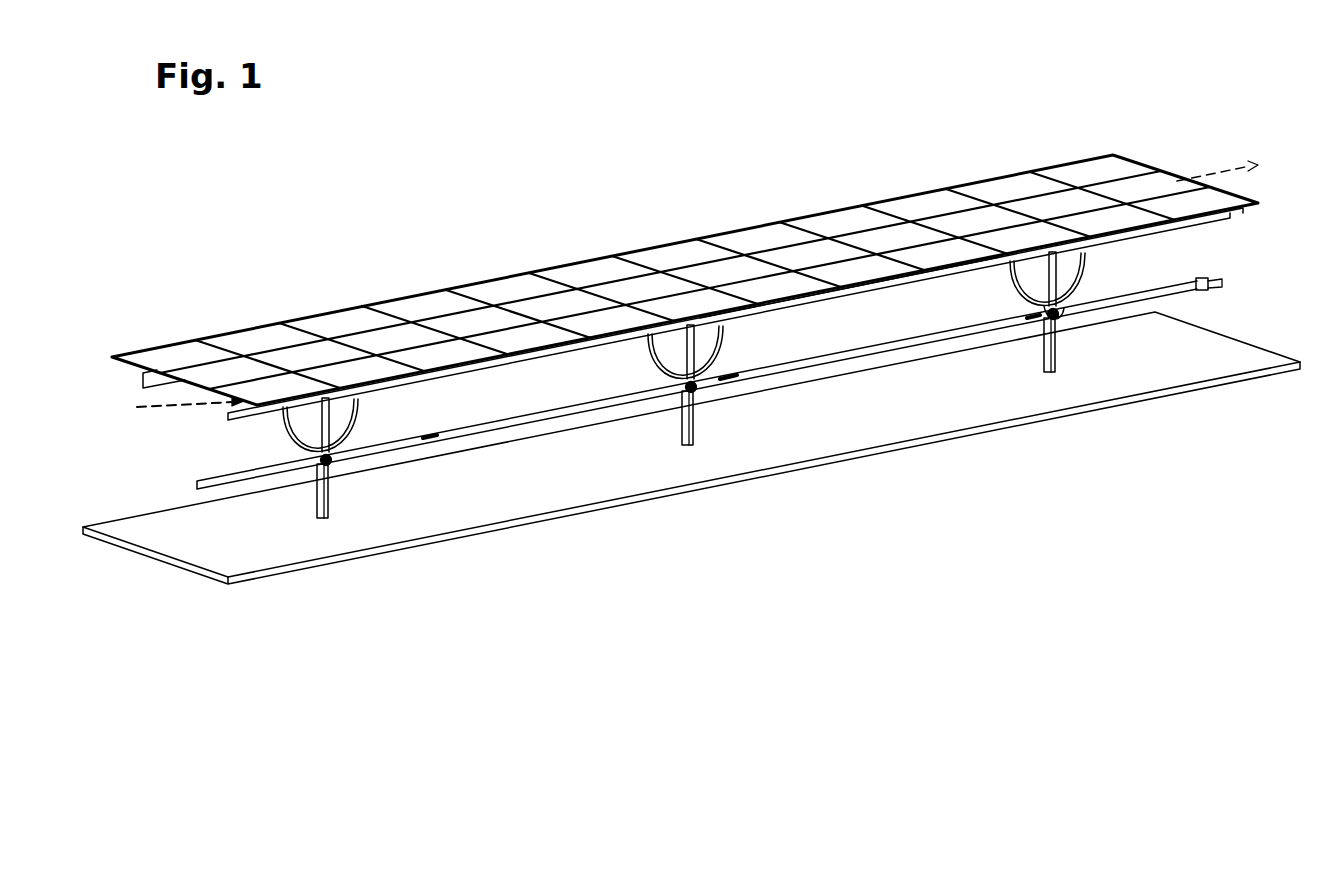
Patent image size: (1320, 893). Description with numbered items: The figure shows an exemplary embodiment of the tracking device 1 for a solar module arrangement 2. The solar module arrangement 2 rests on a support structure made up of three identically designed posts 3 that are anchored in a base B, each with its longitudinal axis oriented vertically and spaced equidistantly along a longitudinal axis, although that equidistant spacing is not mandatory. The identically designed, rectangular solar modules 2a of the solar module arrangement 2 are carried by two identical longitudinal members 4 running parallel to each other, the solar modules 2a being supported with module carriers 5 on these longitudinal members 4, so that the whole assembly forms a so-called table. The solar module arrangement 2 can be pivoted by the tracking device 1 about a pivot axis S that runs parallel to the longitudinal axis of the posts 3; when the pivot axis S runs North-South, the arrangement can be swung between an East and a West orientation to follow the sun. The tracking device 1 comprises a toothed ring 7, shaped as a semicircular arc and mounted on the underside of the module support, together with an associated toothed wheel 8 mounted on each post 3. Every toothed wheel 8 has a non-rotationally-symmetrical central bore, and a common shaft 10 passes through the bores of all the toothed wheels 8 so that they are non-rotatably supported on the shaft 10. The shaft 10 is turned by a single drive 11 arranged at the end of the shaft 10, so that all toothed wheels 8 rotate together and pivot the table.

The tracking device 1 is at (247, 466).
The solar module arrangement 2 is at (1170, 144).
The solar module 2a is at (1013, 182).
The post 3 is at (322, 505).
The longitudinal member 4 is at (150, 378).
The module carrier 5 is at (833, 297).
The toothed ring 7 is at (379, 419).
The toothed wheel 8 is at (329, 468).
The shaft 10 is at (900, 344).
The drive 11 is at (1207, 290).
The base B is at (982, 413).
The pivot axis S is at (708, 278).